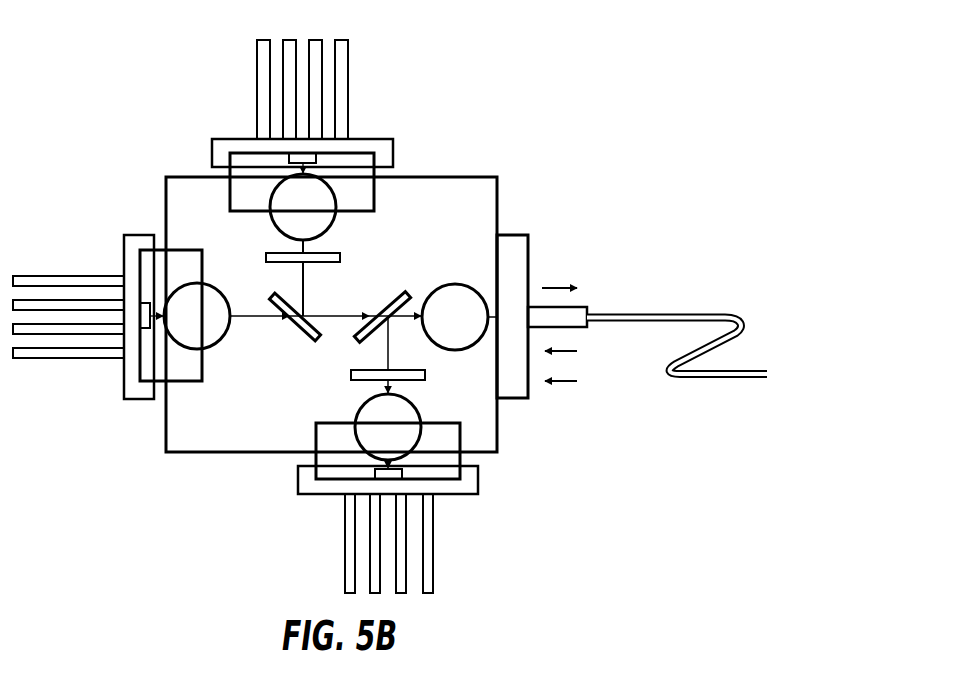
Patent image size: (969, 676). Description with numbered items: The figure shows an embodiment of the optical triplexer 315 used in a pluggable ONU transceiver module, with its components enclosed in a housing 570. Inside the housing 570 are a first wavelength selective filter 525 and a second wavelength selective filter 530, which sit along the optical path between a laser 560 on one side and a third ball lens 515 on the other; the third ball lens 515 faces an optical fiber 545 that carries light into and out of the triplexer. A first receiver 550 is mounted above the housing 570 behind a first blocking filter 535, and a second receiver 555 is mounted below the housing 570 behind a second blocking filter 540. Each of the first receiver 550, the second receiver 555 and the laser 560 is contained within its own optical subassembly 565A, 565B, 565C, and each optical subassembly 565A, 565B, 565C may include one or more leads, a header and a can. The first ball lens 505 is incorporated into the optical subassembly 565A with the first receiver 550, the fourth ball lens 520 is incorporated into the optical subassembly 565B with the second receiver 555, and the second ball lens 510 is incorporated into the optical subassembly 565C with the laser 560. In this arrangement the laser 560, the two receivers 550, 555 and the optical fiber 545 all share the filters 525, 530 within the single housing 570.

The optical triplexer 315 is at (516, 82).
The first ball lens 505 is at (325, 190).
The second ball lens 510 is at (173, 290).
The third ball lens 515 is at (458, 287).
The fourth ball lens 520 is at (422, 432).
The first wavelength selective filter 525 is at (300, 328).
The second wavelength selective filter 530 is at (353, 335).
The first blocking filter 535 is at (267, 254).
The second blocking filter 540 is at (427, 378).
The optical fiber 545 is at (632, 312).
The first receiver 550 is at (337, 160).
The second receiver 555 is at (402, 474).
The laser 560 is at (143, 303).
The optical subassembly 565A is at (245, 141).
The optical subassembly 565B is at (450, 490).
The optical subassembly 565C is at (127, 372).
The housing 570 is at (178, 183).